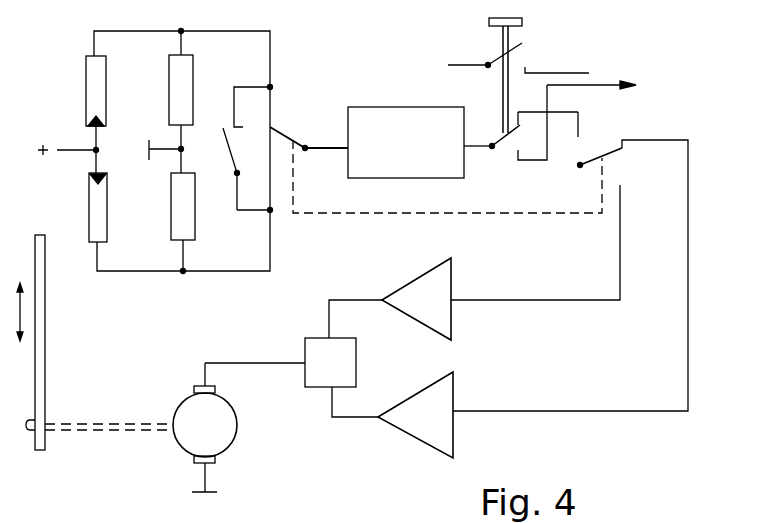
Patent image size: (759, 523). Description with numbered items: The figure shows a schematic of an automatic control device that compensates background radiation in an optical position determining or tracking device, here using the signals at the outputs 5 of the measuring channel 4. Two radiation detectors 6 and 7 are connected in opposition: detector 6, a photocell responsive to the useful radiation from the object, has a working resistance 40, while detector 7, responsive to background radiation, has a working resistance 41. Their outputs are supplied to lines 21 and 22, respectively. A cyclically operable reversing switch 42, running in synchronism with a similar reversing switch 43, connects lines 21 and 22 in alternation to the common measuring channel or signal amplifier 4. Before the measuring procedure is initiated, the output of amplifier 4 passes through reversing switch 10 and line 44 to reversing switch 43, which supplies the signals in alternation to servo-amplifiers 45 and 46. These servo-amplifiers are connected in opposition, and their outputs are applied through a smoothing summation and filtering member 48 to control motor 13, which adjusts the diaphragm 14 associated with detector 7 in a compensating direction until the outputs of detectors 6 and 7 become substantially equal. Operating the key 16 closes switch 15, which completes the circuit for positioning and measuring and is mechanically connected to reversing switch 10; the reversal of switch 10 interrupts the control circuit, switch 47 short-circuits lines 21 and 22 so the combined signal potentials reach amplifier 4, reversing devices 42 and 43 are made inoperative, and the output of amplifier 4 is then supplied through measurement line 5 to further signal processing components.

The measuring channel 4 is at (390, 107).
The outputs of the measuring channel 5 is at (612, 86).
The radiation detector 6 is at (92, 96).
The radiation detector 7 is at (90, 218).
The reversing switch 10 is at (498, 150).
The motor 13 is at (228, 446).
The diaphragm 14 is at (45, 359).
The switch 15 is at (488, 60).
The key 16 is at (522, 18).
The line 21 is at (270, 52).
The line 22 is at (272, 259).
The working resistance 40 is at (193, 85).
The working resistance 41 is at (196, 222).
The reversing switch 42 is at (283, 135).
The reversing switch 43 is at (608, 146).
The line 44 is at (562, 112).
The servo-amplifier 45 is at (408, 436).
The servo-amplifier 46 is at (410, 278).
The switch 47 is at (233, 155).
The smoothing summation and filtering member 48 is at (313, 388).